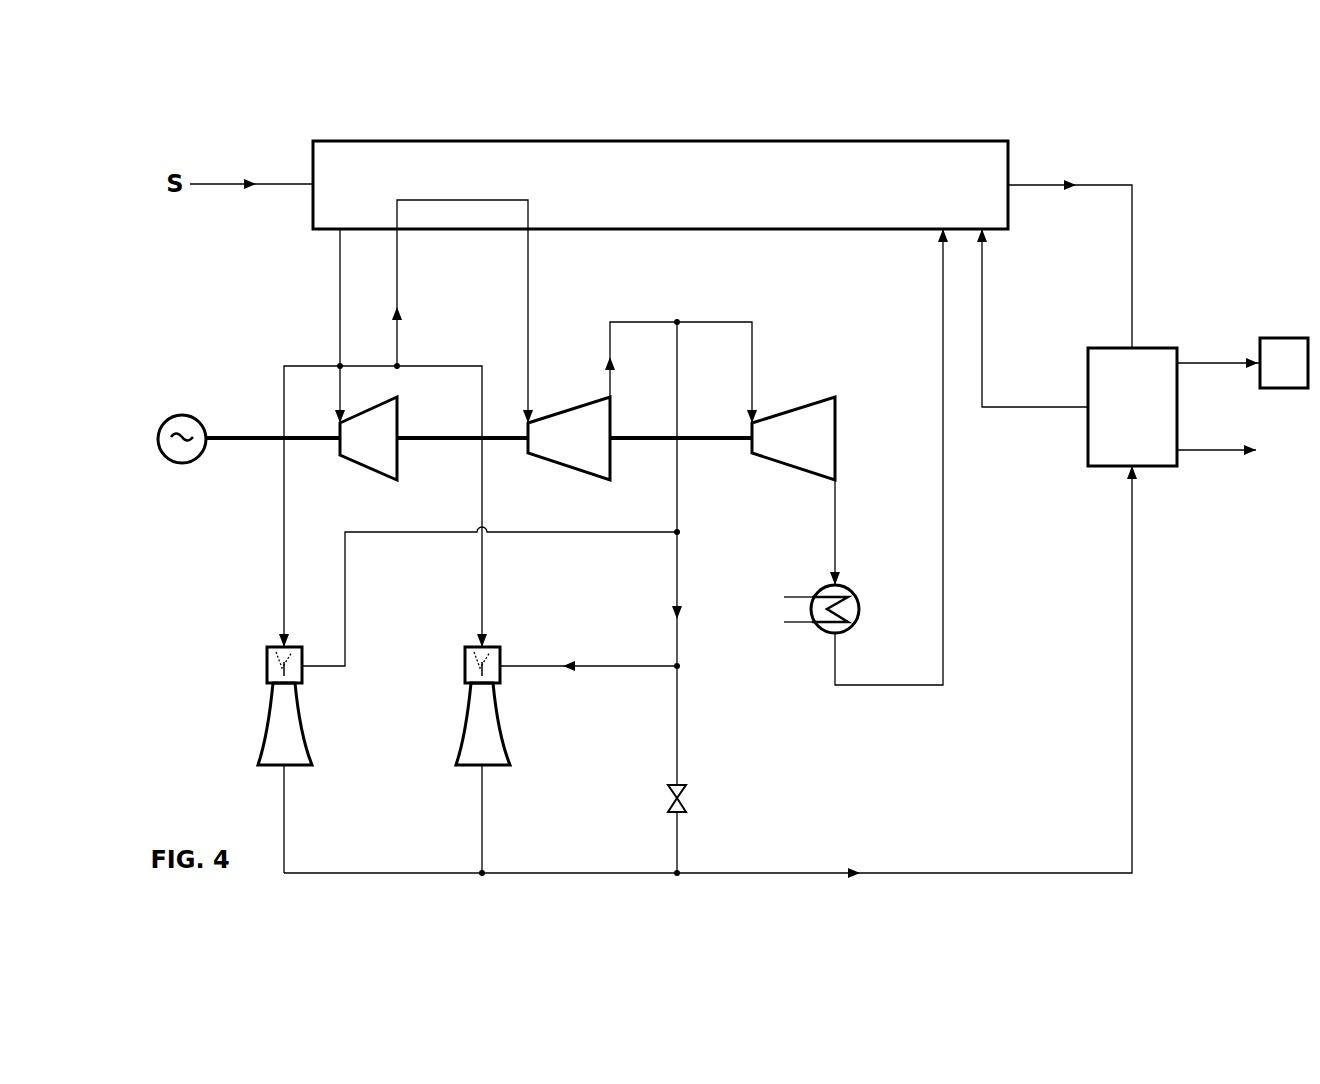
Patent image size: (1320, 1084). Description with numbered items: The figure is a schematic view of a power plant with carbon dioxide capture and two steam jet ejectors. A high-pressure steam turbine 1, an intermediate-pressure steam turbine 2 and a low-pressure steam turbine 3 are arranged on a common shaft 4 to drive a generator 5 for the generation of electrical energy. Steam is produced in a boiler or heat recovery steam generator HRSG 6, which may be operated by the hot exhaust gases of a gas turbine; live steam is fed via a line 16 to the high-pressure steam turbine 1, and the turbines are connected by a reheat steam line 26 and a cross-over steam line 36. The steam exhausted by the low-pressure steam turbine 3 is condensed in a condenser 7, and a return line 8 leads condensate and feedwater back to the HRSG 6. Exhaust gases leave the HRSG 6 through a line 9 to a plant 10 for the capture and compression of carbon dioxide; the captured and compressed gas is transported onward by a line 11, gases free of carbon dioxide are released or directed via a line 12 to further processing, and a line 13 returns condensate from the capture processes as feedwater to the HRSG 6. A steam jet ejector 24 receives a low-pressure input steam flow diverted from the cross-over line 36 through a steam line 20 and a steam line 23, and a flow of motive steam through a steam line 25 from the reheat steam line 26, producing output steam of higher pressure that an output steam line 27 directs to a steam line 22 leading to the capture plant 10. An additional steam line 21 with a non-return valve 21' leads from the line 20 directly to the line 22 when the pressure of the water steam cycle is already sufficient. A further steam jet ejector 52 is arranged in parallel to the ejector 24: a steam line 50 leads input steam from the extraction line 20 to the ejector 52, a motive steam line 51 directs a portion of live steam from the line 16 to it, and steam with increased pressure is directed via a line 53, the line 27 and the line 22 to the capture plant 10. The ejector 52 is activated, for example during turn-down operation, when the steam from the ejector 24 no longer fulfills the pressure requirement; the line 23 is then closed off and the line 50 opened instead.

The high-pressure steam turbine 1 is at (368, 438).
The intermediate-pressure steam turbine 2 is at (569, 438).
The low-pressure steam turbine 3 is at (793, 438).
The shaft 4 is at (235, 445).
The generator 5 is at (182, 452).
The boiler or heat recovery steam generator HRSG 6 is at (660, 185).
The condenser 7 is at (849, 609).
The condensate/feedwater line 8 is at (947, 590).
The line for exhaust gases 9 is at (1096, 185).
The CO2 capture and compression plant 10 is at (1132, 407).
The CO2 storage or transport facility 11 is at (1242, 363).
The CO2 free gases 12 is at (1239, 450).
The line for return condensate 13 is at (985, 317).
The line for live steam to high-pressure steam turbine 16 is at (340, 311).
The line for input steam flow to steam jet ejector 20 is at (680, 568).
The line for low-pressure steam to CO2 capture plant 21 is at (716, 769).
The non-return valve 21' is at (718, 798).
The steam line to CO2 capture plant 22 is at (977, 870).
The line for input steam flow to steam jet ejector 24 23 is at (621, 666).
The steam jet ejector 24 is at (482, 725).
The line for motive steam 25 is at (482, 580).
The reheat line 26 is at (397, 272).
The output steam line 27 is at (482, 821).
The cross-over steam line 36 is at (709, 322).
The extraction steam line, input steam line to steam jet ejector 52 50 is at (557, 535).
The motive steam line 51 is at (284, 580).
The second steam jet ejector 52 is at (284, 725).
The steam line to CO2 capture plant 53 is at (284, 823).